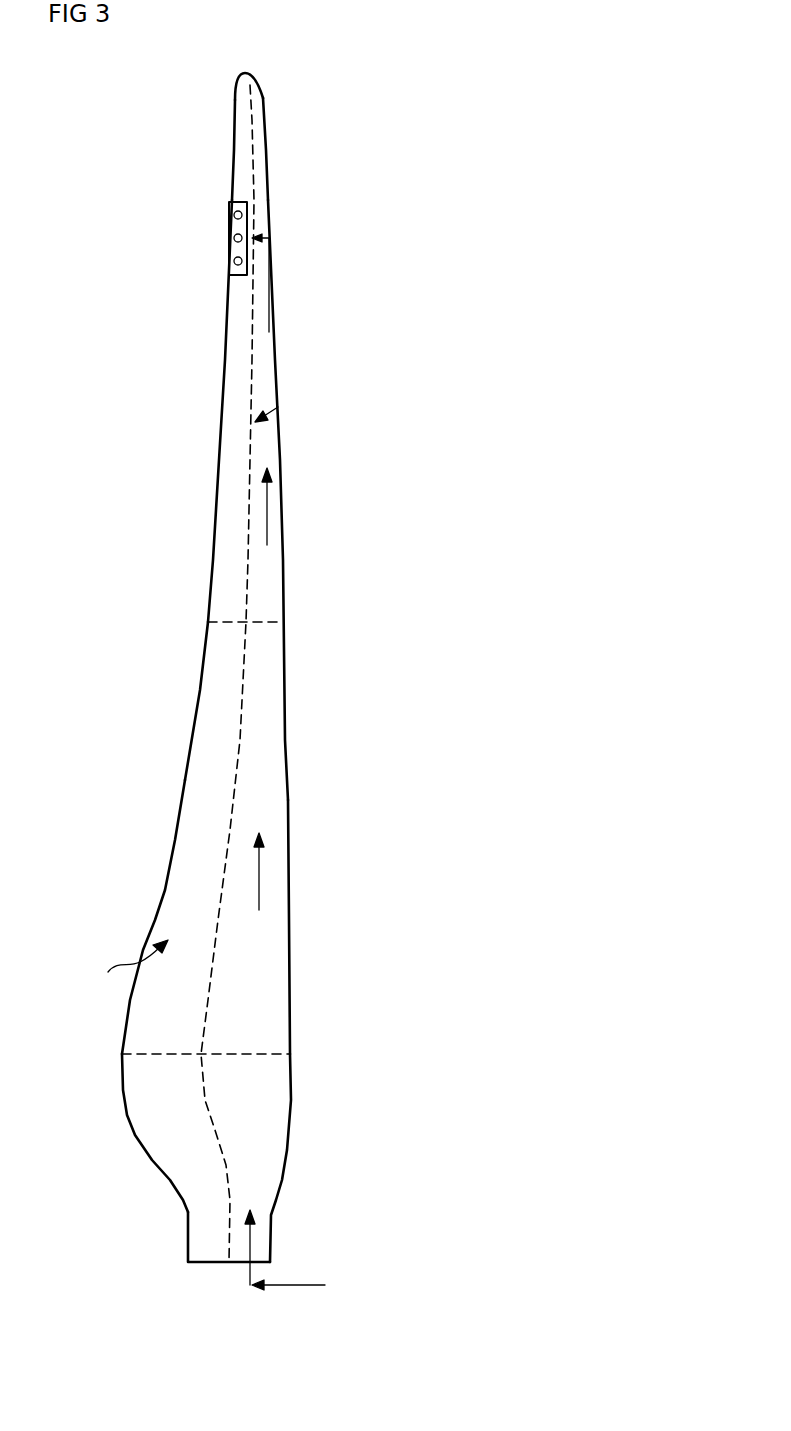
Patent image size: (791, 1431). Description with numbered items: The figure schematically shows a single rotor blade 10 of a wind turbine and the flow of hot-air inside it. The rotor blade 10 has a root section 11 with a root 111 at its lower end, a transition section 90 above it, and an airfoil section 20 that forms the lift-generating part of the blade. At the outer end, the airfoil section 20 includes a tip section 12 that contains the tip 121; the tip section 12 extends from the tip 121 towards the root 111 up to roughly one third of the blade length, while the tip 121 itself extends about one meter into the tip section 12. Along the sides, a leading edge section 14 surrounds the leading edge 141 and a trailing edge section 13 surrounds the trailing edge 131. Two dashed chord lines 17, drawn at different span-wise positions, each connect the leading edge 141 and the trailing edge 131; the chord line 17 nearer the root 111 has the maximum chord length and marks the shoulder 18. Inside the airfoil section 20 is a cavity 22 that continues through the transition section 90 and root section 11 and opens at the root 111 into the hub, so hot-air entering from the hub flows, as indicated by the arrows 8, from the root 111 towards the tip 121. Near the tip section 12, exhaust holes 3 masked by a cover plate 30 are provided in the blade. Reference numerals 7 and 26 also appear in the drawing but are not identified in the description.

The exhaust holes 3 is at (233, 221).
The wind direction 7 is at (298, 1288).
The flow of hot-air 8 is at (270, 305).
The rotor blade 10 is at (378, 420).
The root section 11 is at (265, 1222).
The tip section 12 is at (240, 97).
The trailing edge section 13 is at (210, 742).
The leading edge section 14 is at (274, 778).
The chord line 17 is at (262, 622).
The shoulder 18 is at (125, 1053).
The airfoil section 20 is at (228, 522).
The cavity 22 is at (278, 407).
The centre line 26 is at (242, 710).
The cover plate 30 is at (240, 250).
The transition section 90 is at (163, 1153).
The root 111 is at (224, 1265).
The tip 121 is at (247, 74).
The trailing edge 131 is at (178, 805).
The leading edge 141 is at (290, 830).